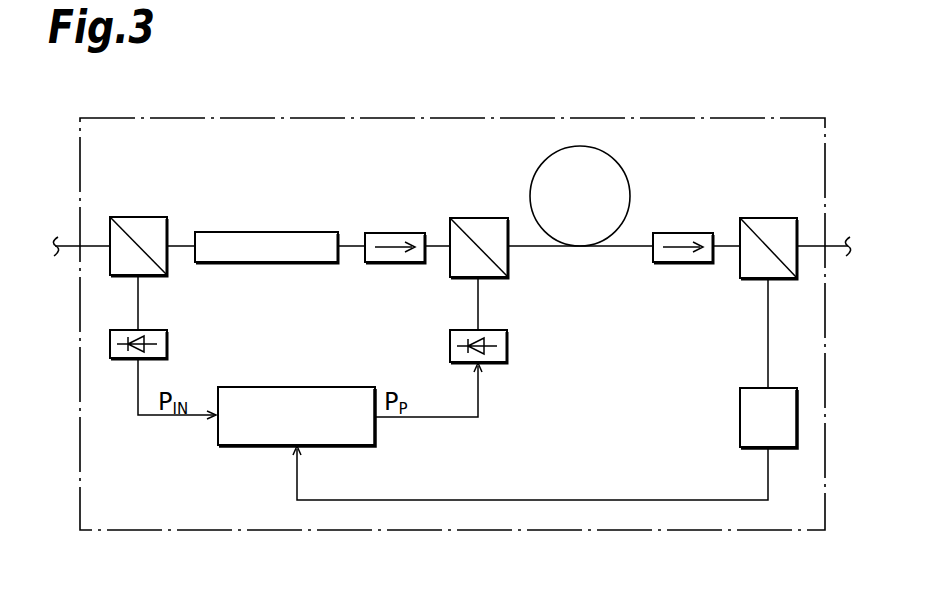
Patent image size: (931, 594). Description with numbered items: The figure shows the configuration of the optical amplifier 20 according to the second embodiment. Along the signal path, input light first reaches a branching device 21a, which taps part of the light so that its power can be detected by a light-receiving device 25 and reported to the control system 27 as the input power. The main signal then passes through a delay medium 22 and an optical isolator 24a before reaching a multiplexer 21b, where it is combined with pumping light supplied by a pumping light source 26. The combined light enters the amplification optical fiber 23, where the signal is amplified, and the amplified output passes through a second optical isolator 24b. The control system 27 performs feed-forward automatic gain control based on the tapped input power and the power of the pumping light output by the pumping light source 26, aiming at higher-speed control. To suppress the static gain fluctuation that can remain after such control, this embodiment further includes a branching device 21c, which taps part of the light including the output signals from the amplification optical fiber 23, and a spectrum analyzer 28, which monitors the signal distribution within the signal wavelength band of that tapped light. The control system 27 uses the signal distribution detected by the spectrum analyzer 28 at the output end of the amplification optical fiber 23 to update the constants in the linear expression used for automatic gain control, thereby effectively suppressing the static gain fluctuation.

The optical amplifier 20 is at (705, 118).
The branching device 21a is at (140, 217).
The multiplexer 21b is at (479, 218).
The branching device 21c is at (765, 218).
The delay medium 22 is at (272, 232).
The amplification optical fiber 23 is at (624, 170).
The optical isolator 24a is at (398, 233).
The optical isolator 24b is at (686, 233).
The light-receiving device 25 is at (168, 342).
The pumping light source 26 is at (508, 346).
The control system 27 is at (297, 387).
The spectrum analyzer 28 is at (740, 415).